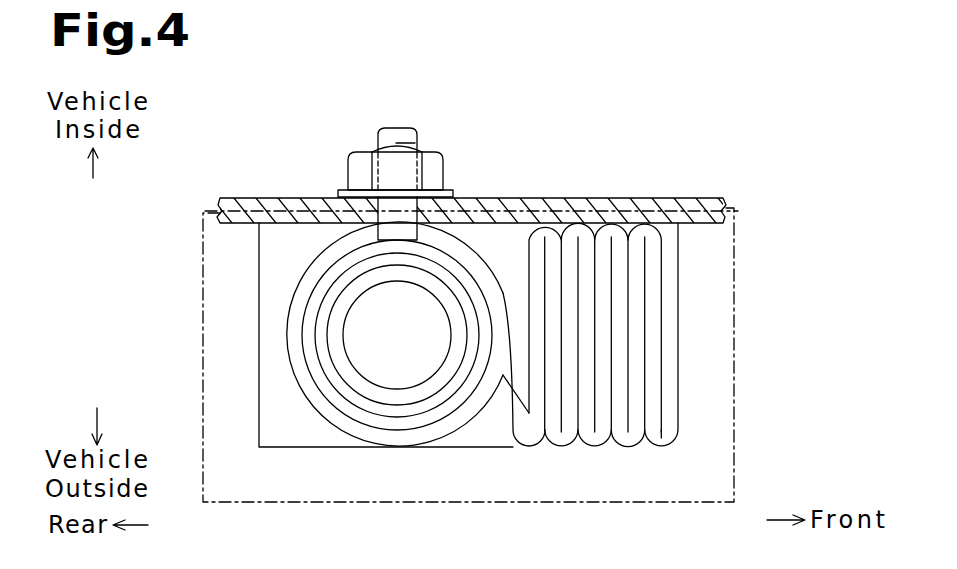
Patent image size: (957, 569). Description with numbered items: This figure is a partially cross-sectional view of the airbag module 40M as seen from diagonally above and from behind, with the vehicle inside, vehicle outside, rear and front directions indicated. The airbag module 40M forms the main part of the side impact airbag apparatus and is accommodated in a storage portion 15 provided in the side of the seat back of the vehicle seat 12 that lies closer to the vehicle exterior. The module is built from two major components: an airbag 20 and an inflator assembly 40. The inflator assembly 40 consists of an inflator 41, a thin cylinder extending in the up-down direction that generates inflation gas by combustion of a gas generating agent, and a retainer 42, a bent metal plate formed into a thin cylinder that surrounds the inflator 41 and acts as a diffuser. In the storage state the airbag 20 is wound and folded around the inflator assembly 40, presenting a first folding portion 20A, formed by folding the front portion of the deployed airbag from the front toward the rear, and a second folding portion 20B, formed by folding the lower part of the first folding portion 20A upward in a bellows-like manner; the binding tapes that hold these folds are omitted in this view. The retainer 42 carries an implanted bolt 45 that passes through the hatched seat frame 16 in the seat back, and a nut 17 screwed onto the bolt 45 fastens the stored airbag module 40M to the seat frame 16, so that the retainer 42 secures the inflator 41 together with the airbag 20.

The vehicle seat 12 is at (681, 334).
The storage portion 15 is at (201, 281).
The seat frame 16 is at (607, 197).
The nut 17 is at (437, 168).
The airbag 20 is at (468, 360).
The first folding portion 20A is at (650, 335).
The second folding portion 20B is at (259, 343).
The inflator assembly 40 is at (397, 367).
The airbag module 40M is at (672, 474).
The inflator 41 is at (417, 405).
The retainer 42 is at (358, 422).
The bolt 45 is at (413, 128).